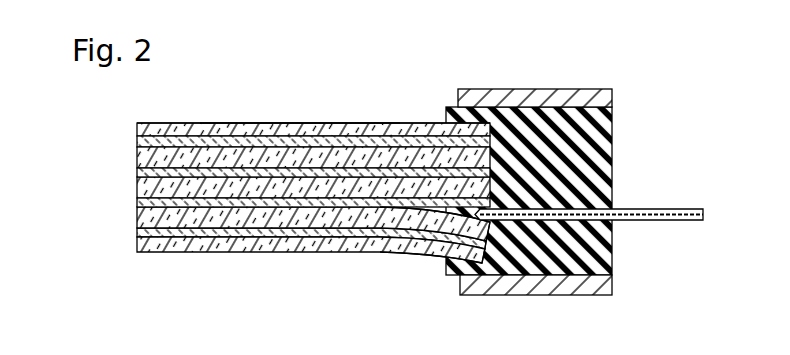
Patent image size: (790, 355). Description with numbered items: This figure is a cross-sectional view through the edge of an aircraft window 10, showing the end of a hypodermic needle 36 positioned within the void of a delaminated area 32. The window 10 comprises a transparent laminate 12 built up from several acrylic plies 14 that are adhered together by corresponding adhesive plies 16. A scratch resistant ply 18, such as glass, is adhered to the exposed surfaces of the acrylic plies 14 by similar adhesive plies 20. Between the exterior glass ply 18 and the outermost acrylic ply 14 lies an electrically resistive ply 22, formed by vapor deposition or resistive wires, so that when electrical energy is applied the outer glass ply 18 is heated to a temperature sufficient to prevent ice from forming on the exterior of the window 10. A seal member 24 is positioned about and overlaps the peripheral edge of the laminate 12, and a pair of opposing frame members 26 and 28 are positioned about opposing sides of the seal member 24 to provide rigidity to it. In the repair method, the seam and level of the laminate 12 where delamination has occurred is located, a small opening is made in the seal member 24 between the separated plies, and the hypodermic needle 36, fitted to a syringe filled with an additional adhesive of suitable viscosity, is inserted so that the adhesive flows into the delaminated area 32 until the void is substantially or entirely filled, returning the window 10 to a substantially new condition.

The aircraft window 10 is at (269, 179).
The transparent laminate 12 is at (240, 122).
The acrylic plies 14 is at (137, 160).
The adhesive plies 16 is at (137, 173).
The scratch resistant ply 18 is at (298, 127).
The adhesive plies 20 is at (137, 128).
The electrically resistive ply 22 is at (137, 141).
The seal member 24 is at (598, 250).
The frame member 26 is at (522, 93).
The frame member 28 is at (502, 287).
The delaminated area 32 is at (443, 222).
The hypodermic needle 36 is at (631, 210).